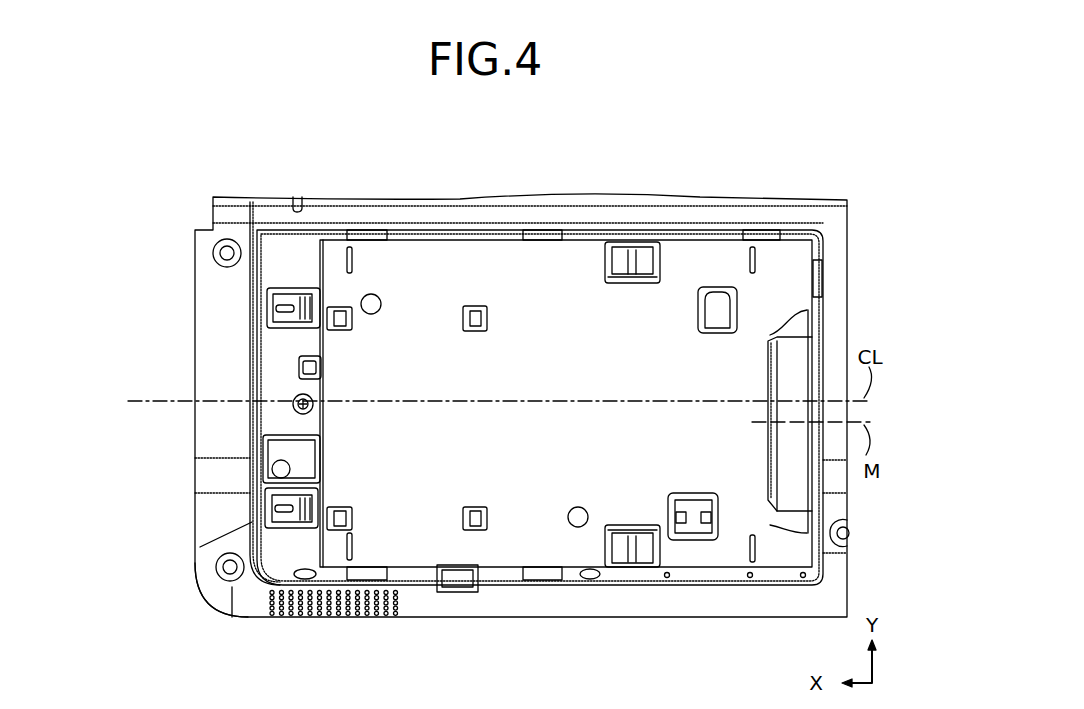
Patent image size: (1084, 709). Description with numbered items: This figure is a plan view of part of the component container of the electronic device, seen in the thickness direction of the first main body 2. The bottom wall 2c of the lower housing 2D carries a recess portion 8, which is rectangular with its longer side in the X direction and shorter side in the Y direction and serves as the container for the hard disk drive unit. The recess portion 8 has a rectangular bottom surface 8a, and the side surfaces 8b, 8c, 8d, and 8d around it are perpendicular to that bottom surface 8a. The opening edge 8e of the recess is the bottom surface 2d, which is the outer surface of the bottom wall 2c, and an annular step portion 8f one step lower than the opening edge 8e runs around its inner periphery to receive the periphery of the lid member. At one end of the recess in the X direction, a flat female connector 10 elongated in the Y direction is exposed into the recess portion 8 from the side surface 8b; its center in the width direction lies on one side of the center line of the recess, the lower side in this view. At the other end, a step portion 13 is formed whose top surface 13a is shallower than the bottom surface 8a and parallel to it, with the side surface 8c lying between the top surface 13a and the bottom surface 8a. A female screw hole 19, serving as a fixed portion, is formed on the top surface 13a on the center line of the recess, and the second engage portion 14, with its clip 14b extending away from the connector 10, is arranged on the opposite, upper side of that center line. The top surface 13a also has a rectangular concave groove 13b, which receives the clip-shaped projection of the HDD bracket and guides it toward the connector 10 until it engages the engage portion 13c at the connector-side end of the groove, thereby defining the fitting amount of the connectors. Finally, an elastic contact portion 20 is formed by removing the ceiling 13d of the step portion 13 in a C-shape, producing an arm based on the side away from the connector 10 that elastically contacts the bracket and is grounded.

The first main body 2 is at (509, 371).
The lower housing 2D is at (188, 226).
The bottom surface 2d is at (416, 214).
The bottom wall 2c is at (207, 532).
The recess portion 8 is at (518, 403).
The bottom surface 8a is at (592, 257).
The side surface 8b is at (805, 281).
The side surface 8c is at (324, 537).
The side surfaces 8d is at (487, 247).
The opening edge 8e is at (662, 232).
The annular step portion 8f is at (712, 233).
The connector 10 is at (791, 510).
The step portion 13 is at (200, 395).
The top surface 13a is at (182, 395).
The ceiling 13d is at (285, 338).
The concave groove 13b is at (220, 468).
The engage portion 13c is at (322, 465).
The second engage portion 14 is at (222, 343).
The clip 14b is at (290, 366).
The female screw hole 19 is at (292, 408).
The elastic contact portion 20 is at (284, 283).